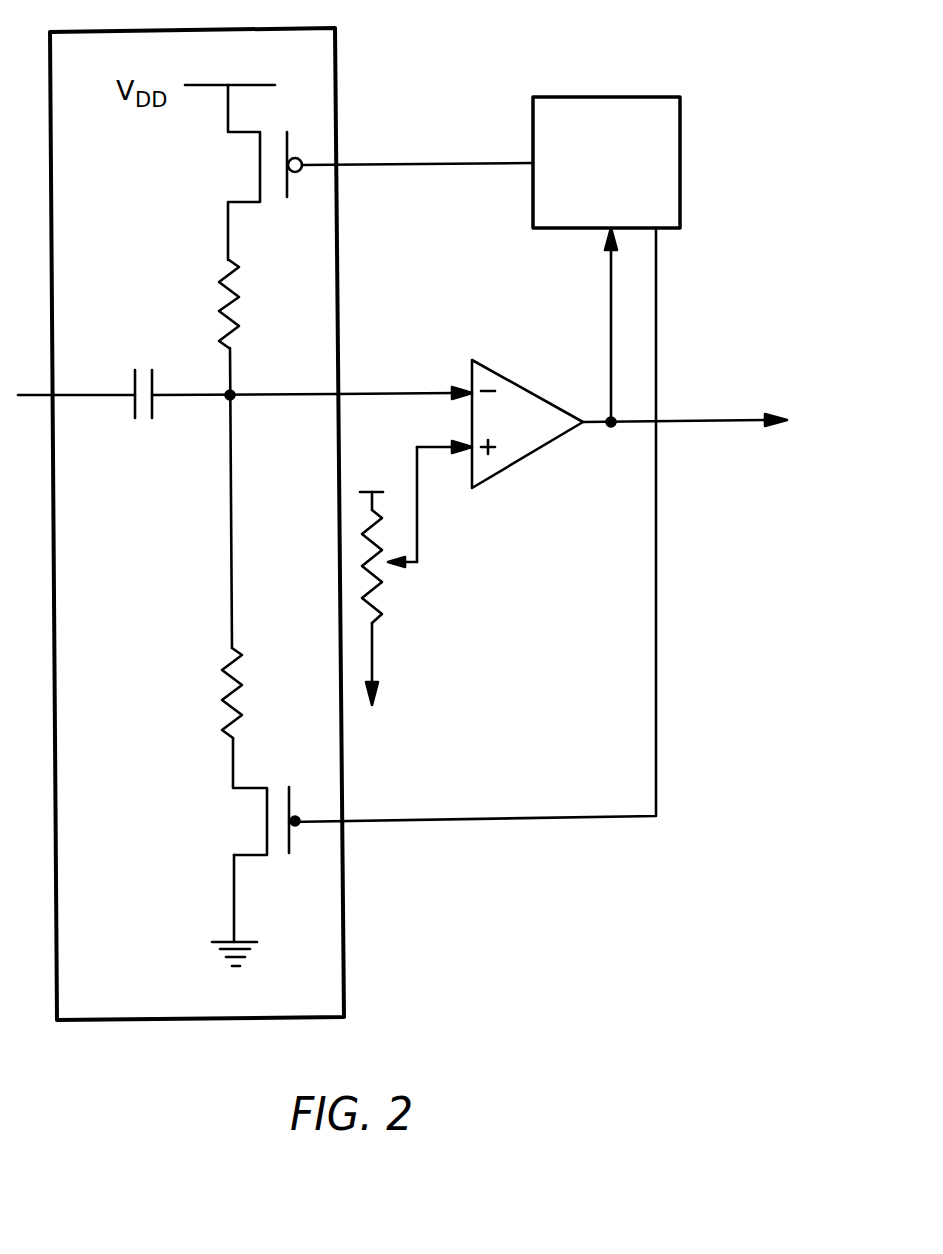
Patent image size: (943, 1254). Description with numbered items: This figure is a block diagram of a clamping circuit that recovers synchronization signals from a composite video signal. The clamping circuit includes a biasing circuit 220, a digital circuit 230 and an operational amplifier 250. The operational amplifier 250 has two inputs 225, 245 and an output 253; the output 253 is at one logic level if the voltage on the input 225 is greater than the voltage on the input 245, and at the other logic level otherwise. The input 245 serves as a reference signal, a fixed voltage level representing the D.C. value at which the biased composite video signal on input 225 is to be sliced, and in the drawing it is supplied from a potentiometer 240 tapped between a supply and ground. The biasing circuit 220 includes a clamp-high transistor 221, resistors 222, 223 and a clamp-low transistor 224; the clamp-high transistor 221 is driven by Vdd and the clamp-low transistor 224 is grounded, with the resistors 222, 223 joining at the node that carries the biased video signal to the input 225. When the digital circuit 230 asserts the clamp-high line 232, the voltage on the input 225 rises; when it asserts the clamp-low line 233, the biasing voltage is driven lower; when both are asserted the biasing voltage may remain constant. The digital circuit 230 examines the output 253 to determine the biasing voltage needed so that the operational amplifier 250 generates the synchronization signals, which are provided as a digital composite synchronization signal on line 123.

The line 123 is at (715, 420).
The biasing circuit 220 is at (338, 57).
The clamp-high transistor 221 is at (228, 142).
The resistor 222 is at (218, 290).
The resistor 223 is at (222, 697).
The clamp-low transistor 224 is at (251, 860).
The input 225 is at (405, 392).
The digital circuit 230 is at (630, 96).
The clamp-high line 232 is at (435, 165).
The clamp-low line 233 is at (657, 552).
The potentiometer 240 is at (382, 594).
The input 245 is at (458, 452).
The operational amplifier 250 is at (522, 388).
The output 253 is at (611, 271).